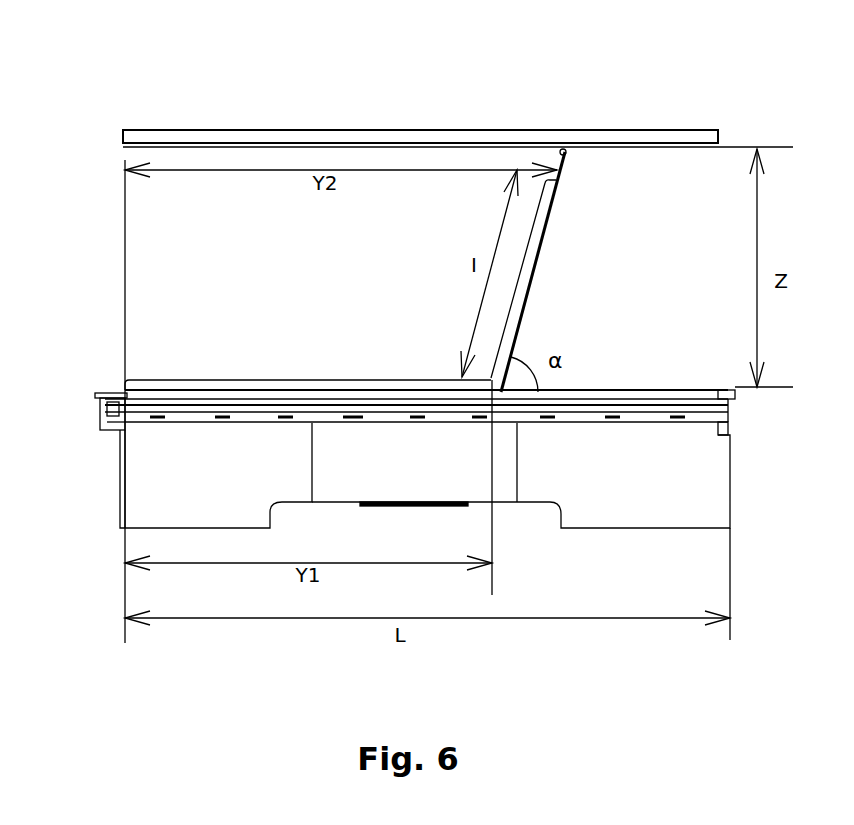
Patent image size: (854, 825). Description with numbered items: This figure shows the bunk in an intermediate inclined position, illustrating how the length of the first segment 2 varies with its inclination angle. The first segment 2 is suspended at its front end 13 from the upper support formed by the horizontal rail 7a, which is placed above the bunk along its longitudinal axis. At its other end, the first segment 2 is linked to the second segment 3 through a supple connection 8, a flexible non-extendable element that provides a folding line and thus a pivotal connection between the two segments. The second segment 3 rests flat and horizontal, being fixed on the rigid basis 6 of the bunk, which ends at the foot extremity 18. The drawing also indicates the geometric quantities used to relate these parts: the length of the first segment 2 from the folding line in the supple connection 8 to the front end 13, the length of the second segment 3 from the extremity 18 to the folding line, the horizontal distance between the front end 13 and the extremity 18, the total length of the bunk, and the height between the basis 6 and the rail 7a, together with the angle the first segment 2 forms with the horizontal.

The rail 7a is at (703, 120).
The first segment 2 is at (540, 263).
The front end 13 is at (560, 184).
The second segment 3 is at (217, 382).
The basis 6 is at (620, 388).
The supple connection 8 is at (503, 395).
The extremity 18 is at (99, 390).